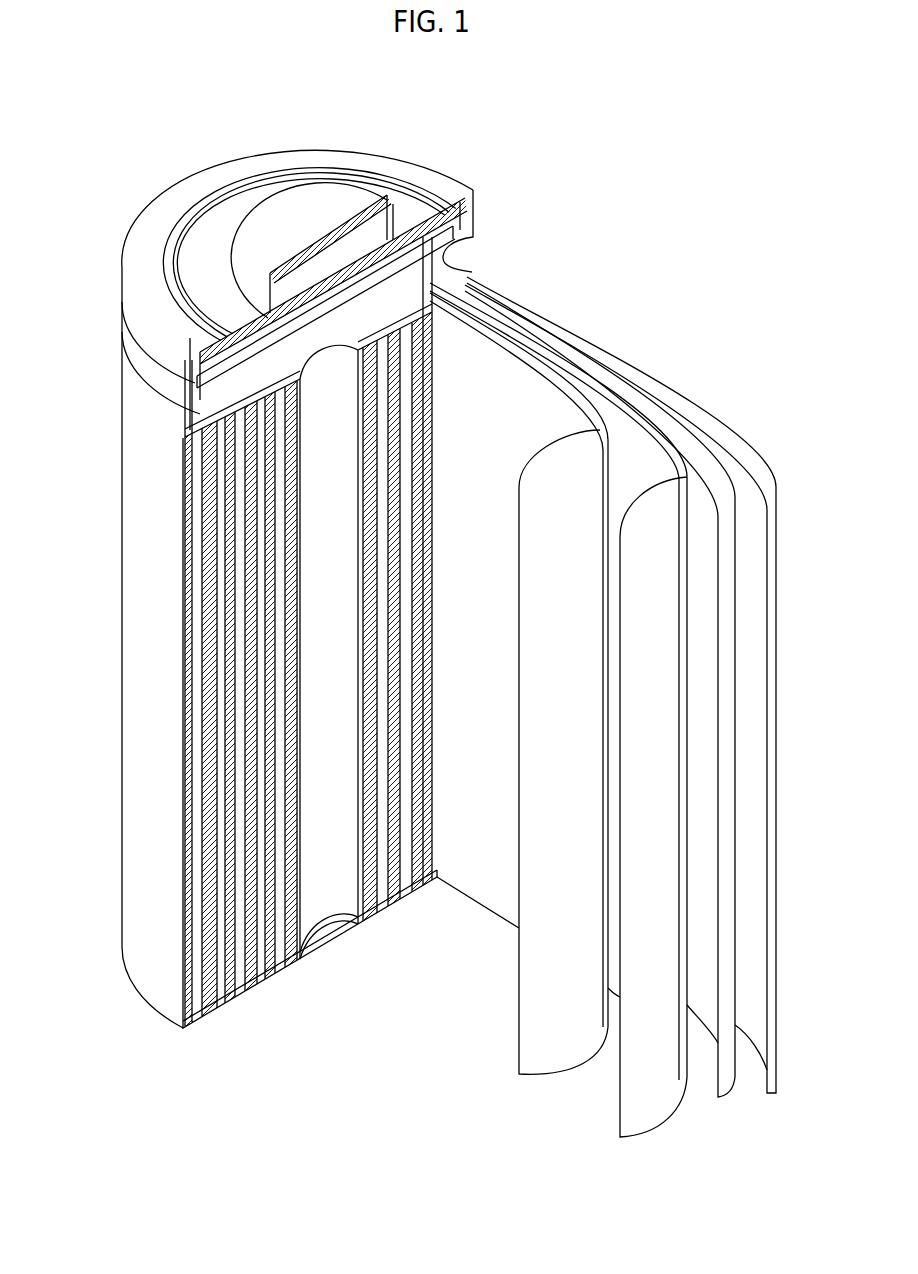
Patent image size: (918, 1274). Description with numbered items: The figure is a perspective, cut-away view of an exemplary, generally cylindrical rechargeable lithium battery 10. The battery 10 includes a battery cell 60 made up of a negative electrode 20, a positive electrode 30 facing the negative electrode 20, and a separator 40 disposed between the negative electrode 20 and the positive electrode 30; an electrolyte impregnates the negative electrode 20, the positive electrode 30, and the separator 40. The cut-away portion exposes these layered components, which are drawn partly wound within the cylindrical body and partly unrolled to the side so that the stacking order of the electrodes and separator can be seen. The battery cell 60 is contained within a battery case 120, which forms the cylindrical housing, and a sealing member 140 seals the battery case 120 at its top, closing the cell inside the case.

The rechargeable lithium battery 10 is at (470, 138).
The negative electrode 20 is at (737, 440).
The positive electrode 30 is at (620, 407).
The separator 40 is at (492, 343).
The battery cell 60 is at (325, 1025).
The battery case 120 is at (130, 637).
The sealing member 140 is at (285, 200).